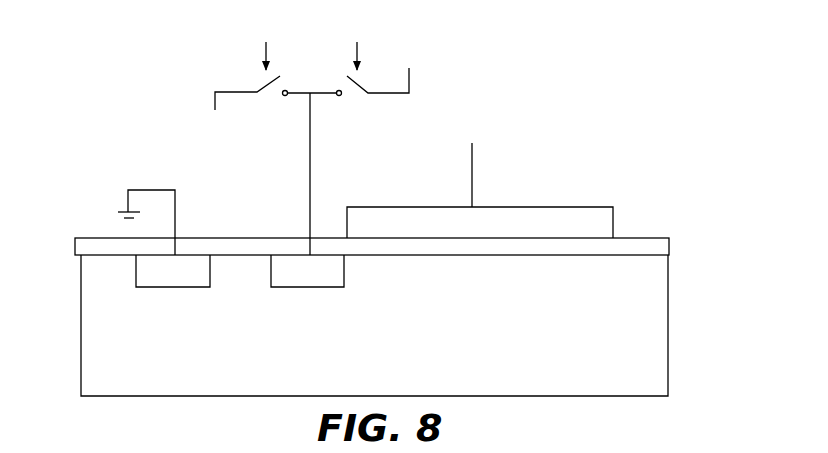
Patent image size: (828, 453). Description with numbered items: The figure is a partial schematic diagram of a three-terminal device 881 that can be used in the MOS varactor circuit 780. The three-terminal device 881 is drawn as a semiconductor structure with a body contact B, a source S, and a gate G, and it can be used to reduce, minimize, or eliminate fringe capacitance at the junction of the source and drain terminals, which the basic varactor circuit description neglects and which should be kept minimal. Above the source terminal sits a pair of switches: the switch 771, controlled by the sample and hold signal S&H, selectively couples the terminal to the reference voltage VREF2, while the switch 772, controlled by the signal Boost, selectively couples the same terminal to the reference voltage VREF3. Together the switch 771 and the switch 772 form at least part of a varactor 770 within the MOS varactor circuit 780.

The varactor 770 is at (443, 27).
The switch 771 is at (272, 103).
The switch 772 is at (356, 106).
The MOS varactor circuit 780 is at (138, 107).
The three-terminal device 881 is at (643, 186).